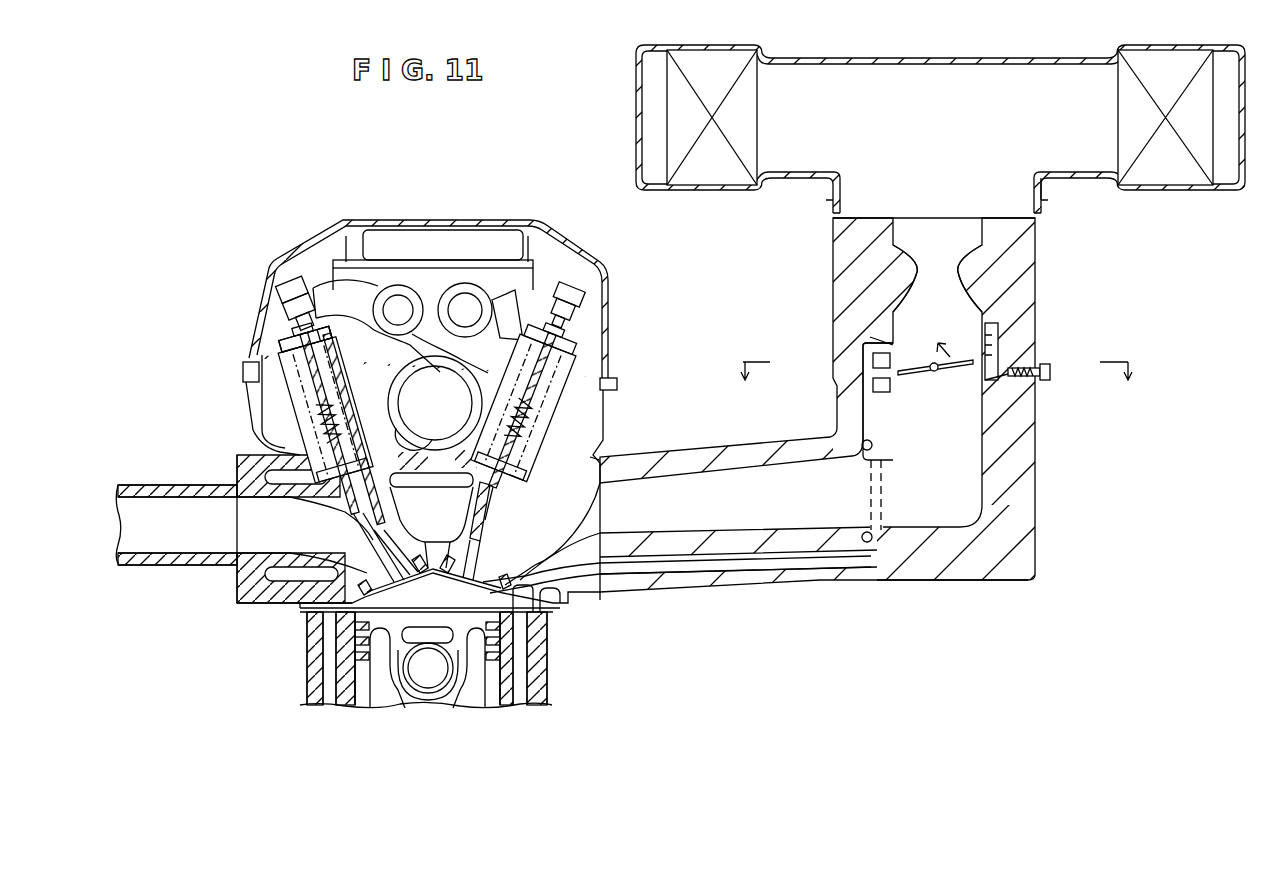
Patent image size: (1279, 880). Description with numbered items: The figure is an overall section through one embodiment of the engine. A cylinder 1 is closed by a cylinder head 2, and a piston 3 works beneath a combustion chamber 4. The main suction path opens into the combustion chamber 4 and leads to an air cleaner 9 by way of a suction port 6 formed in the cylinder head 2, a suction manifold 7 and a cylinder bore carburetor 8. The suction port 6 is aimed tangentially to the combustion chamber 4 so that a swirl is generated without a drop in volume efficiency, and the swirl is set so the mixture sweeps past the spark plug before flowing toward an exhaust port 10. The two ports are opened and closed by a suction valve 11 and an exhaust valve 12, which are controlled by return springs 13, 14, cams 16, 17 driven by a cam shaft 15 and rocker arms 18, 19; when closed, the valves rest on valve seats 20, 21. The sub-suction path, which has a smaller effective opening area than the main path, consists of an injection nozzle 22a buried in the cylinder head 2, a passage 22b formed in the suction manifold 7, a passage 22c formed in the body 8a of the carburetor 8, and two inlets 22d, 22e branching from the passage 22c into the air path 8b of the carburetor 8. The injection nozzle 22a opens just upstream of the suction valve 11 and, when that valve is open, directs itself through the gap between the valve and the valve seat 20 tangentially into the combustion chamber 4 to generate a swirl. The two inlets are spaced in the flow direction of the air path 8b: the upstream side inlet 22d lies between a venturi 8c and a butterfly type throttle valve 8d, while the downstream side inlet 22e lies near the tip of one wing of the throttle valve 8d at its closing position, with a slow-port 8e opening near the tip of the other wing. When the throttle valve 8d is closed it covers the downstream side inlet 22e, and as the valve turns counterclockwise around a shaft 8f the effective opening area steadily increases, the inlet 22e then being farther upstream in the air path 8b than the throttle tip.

The cylinder 1 is at (310, 700).
The cylinder head 2 is at (253, 600).
The piston 3 is at (400, 663).
The combustion chamber 4 is at (403, 600).
The suction port 6 is at (612, 535).
The suction manifold 7 is at (1008, 578).
The cylinder bore carburetor 8 is at (722, 440).
The body of the carburetor 8a is at (1022, 314).
The air path of the carburetor 8b is at (905, 310).
The venturi 8c is at (917, 270).
The throttle valve 8d is at (987, 380).
The slow-port 8e is at (988, 363).
The shaft 8f is at (997, 387).
The air cleaner 9 is at (1085, 178).
The exhaust port 10 is at (245, 540).
The suction valve 11 is at (487, 580).
The exhaust valve 12 is at (390, 597).
The return spring 13 is at (560, 392).
The return spring 14 is at (290, 400).
The cam shaft 15 is at (296, 343).
The cam 16 is at (590, 457).
The cam 17 is at (397, 417).
The rocker arm 18 is at (330, 292).
The rocker arm 19 is at (487, 293).
The valve seat 20 is at (550, 613).
The valve seat 21 is at (313, 615).
The injection nozzle 22a is at (583, 587).
The passage 22b is at (817, 560).
The passage 22c is at (877, 363).
The upstream side inlet 22d is at (877, 337).
The downstream side inlet 22e is at (880, 378).